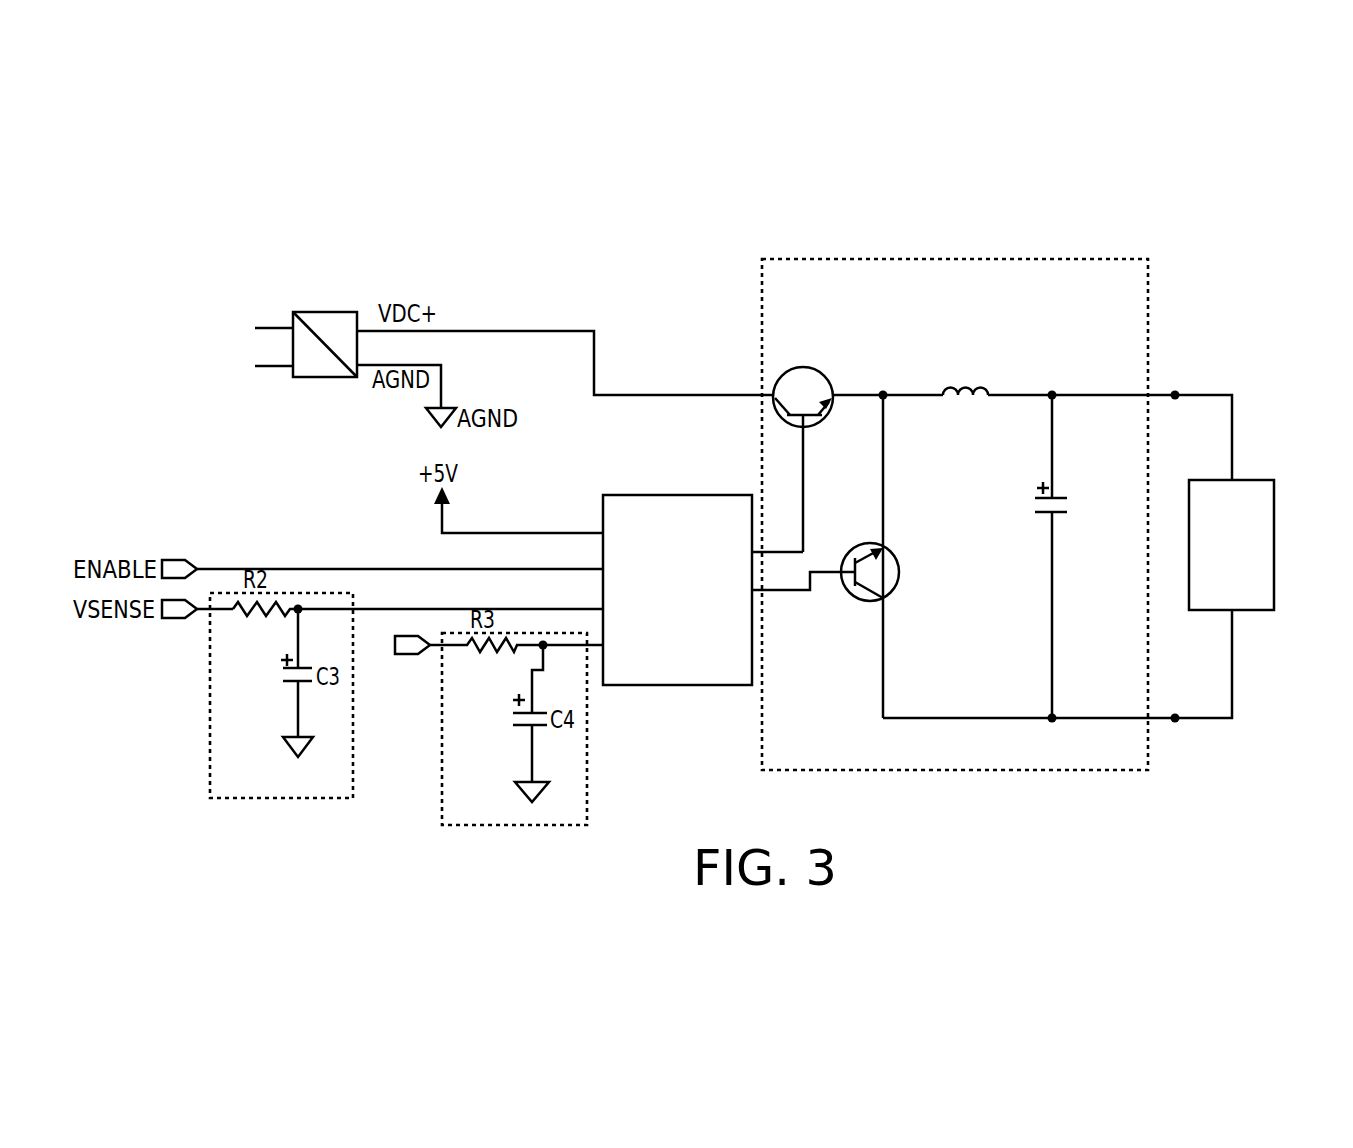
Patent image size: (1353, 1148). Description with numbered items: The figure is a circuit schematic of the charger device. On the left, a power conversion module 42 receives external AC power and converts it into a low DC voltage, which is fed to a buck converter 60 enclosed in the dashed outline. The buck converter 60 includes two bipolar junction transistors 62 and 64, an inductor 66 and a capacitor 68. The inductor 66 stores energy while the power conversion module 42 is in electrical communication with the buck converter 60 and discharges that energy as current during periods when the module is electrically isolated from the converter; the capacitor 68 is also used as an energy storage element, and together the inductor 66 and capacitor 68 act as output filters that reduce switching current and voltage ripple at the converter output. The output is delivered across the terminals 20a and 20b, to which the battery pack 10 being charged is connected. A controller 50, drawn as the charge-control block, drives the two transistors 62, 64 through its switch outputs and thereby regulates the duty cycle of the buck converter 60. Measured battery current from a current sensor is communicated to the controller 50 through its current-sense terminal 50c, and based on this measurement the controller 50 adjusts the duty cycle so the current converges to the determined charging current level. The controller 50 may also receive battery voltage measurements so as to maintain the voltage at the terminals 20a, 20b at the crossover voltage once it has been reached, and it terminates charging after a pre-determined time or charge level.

The load / battery 10 is at (1274, 505).
The terminal 20a is at (1178, 393).
The terminal 20b is at (1176, 721).
The power conversion module 42 is at (352, 312).
The controller 50 is at (670, 686).
The terminal 50c is at (438, 650).
The buck converter 60 is at (985, 260).
The bipolar junction transistor 62 is at (803, 367).
The bipolar junction transistor 64 is at (898, 565).
The inductor 66 is at (985, 390).
The capacitor 68 is at (1055, 514).